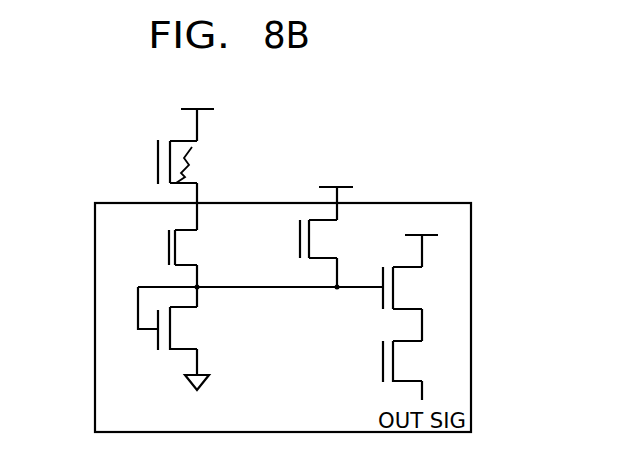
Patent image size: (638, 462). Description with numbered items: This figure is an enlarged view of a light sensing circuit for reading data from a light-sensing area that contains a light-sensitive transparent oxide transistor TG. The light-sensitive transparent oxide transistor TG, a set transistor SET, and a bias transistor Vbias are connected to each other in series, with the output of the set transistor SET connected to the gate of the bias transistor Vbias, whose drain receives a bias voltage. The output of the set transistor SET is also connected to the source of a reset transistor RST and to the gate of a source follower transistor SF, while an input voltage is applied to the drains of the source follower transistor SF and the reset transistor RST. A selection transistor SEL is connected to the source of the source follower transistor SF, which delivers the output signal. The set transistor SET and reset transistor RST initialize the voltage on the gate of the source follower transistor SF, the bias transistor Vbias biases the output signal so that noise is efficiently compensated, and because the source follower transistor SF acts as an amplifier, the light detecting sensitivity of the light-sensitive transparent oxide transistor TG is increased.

The light-sensitive transparent oxide transistor TG is at (158, 161).
The set transistor SET is at (169, 251).
The reset transistor RST is at (300, 241).
The bias transistor Vbias is at (197, 338).
The source follower transistor SF is at (419, 288).
The selection transistor SEL is at (383, 361).